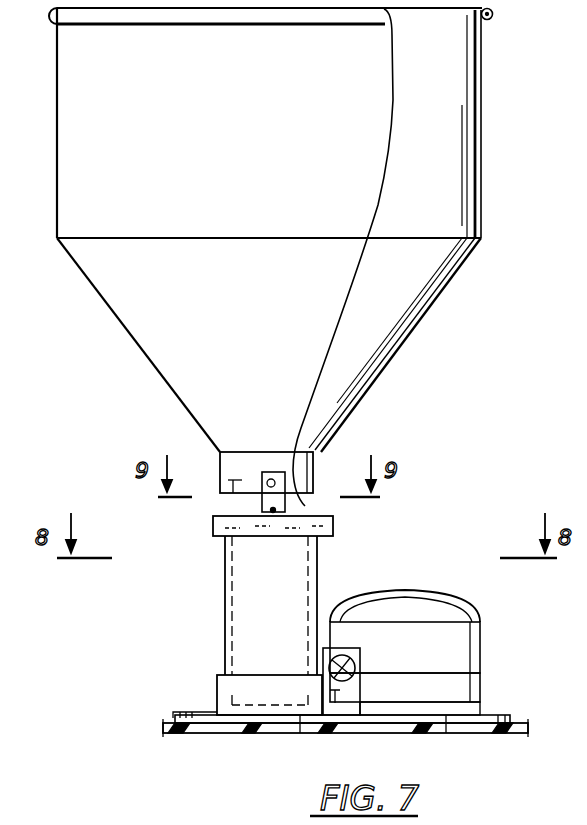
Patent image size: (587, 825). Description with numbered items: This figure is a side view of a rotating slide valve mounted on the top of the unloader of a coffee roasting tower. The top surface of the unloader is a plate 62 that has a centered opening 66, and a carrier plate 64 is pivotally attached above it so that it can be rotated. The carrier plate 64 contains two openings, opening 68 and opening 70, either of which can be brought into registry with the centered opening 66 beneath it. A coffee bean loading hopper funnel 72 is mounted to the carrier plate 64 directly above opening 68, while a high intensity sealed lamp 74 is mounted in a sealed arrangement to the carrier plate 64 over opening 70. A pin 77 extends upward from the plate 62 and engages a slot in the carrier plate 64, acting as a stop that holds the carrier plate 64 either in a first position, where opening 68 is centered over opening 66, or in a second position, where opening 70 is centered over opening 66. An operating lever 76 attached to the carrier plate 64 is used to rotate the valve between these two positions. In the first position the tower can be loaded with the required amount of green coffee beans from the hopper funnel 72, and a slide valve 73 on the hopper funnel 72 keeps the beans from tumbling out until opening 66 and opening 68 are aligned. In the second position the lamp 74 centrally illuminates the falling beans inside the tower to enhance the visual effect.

The top plate 62 is at (522, 728).
The carrier plate 64 is at (505, 717).
The centered opening 66 is at (306, 733).
The opening 68 is at (238, 730).
The opening 70 is at (445, 735).
The coffee bean loading hopper funnel 72 is at (483, 170).
The slide valve 73 is at (340, 526).
The high intensity sealed lamp 74 is at (435, 605).
The operating lever 76 is at (338, 656).
The pin 77 is at (212, 710).